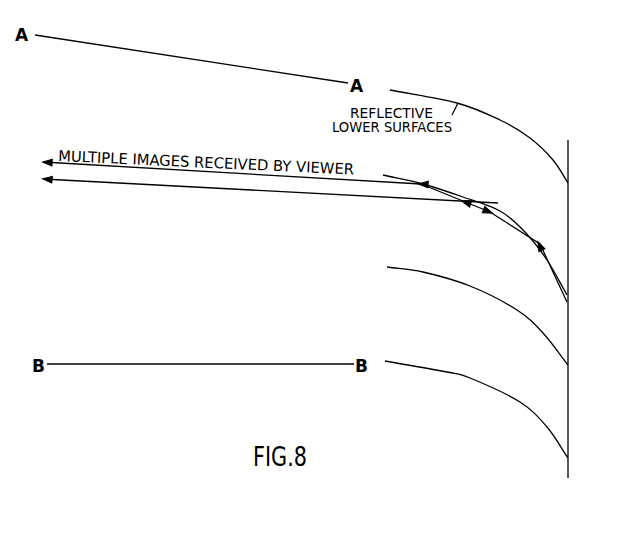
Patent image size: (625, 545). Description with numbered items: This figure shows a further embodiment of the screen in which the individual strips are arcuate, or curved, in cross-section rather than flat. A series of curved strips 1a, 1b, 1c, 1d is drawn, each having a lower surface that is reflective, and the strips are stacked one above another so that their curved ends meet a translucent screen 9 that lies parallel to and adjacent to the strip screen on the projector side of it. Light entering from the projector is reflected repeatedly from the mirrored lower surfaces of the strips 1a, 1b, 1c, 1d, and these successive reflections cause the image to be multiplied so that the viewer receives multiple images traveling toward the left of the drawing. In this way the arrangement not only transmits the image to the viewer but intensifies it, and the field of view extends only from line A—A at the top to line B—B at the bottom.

The first layer 1a is at (522, 393).
The second layer 1b is at (517, 312).
The third layer 1c is at (502, 206).
The fourth layer 1d is at (528, 141).
The translucent screen 9 is at (568, 237).